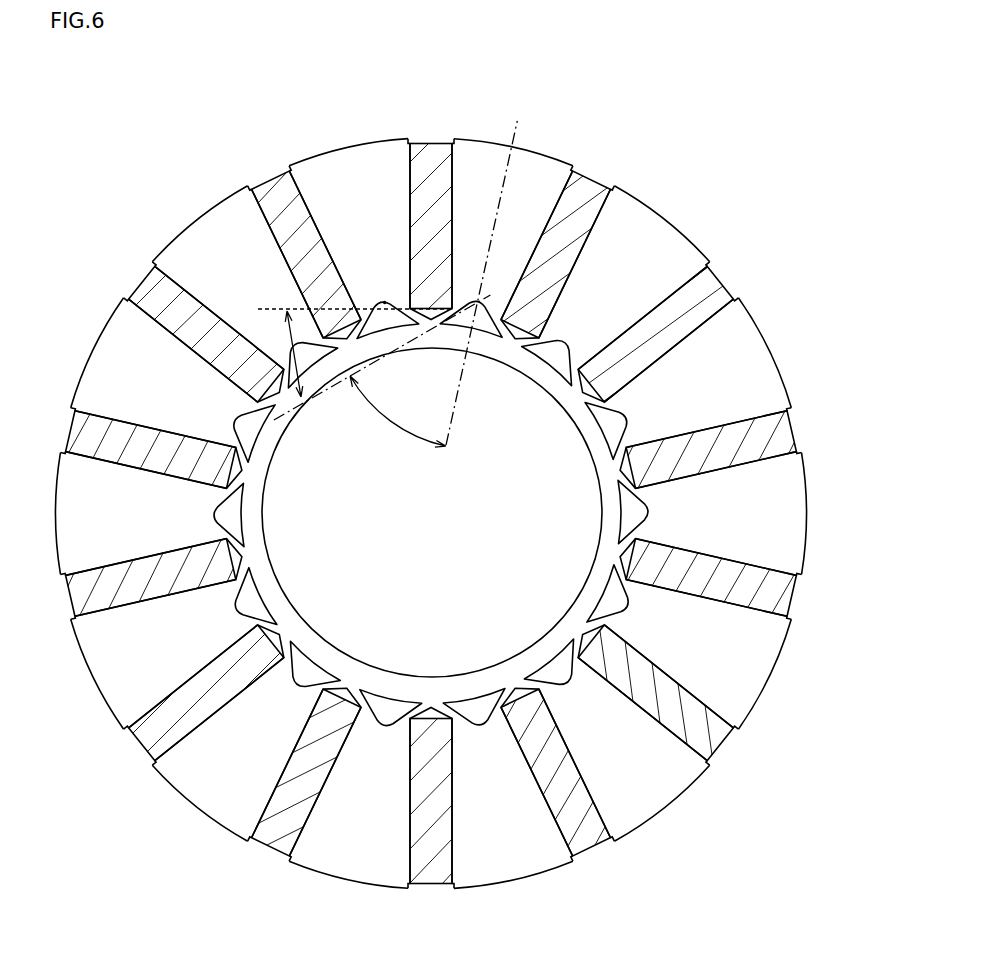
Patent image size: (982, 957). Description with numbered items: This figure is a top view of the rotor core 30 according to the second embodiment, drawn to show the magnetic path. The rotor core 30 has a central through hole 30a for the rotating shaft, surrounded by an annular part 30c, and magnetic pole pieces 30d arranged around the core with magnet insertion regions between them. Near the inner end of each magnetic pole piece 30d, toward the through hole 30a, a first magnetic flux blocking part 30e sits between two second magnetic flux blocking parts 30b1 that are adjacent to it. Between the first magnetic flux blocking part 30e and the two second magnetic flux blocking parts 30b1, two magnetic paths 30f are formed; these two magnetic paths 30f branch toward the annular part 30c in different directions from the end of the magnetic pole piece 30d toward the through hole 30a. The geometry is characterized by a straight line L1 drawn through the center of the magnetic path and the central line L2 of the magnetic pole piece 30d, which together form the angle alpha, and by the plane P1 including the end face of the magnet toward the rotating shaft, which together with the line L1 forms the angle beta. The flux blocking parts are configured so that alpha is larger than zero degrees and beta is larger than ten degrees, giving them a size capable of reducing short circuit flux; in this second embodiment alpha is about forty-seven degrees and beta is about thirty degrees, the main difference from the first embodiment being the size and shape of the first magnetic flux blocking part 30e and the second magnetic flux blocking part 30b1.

The rotor core 30 is at (696, 176).
The through hole 30a is at (520, 532).
The second magnetic flux blocking part 30b1 is at (412, 308).
The annular part 30c is at (504, 318).
The magnetic pole piece 30d is at (483, 157).
The first magnetic flux blocking part 30e is at (486, 312).
The magnetic path 30f is at (434, 332).
The plane including the end face of the magnet toward the rotating shaft P1 is at (362, 305).
The straight line through the center of the magnetic path L1 is at (292, 404).
The central line of the magnetic pole piece L2 is at (502, 267).